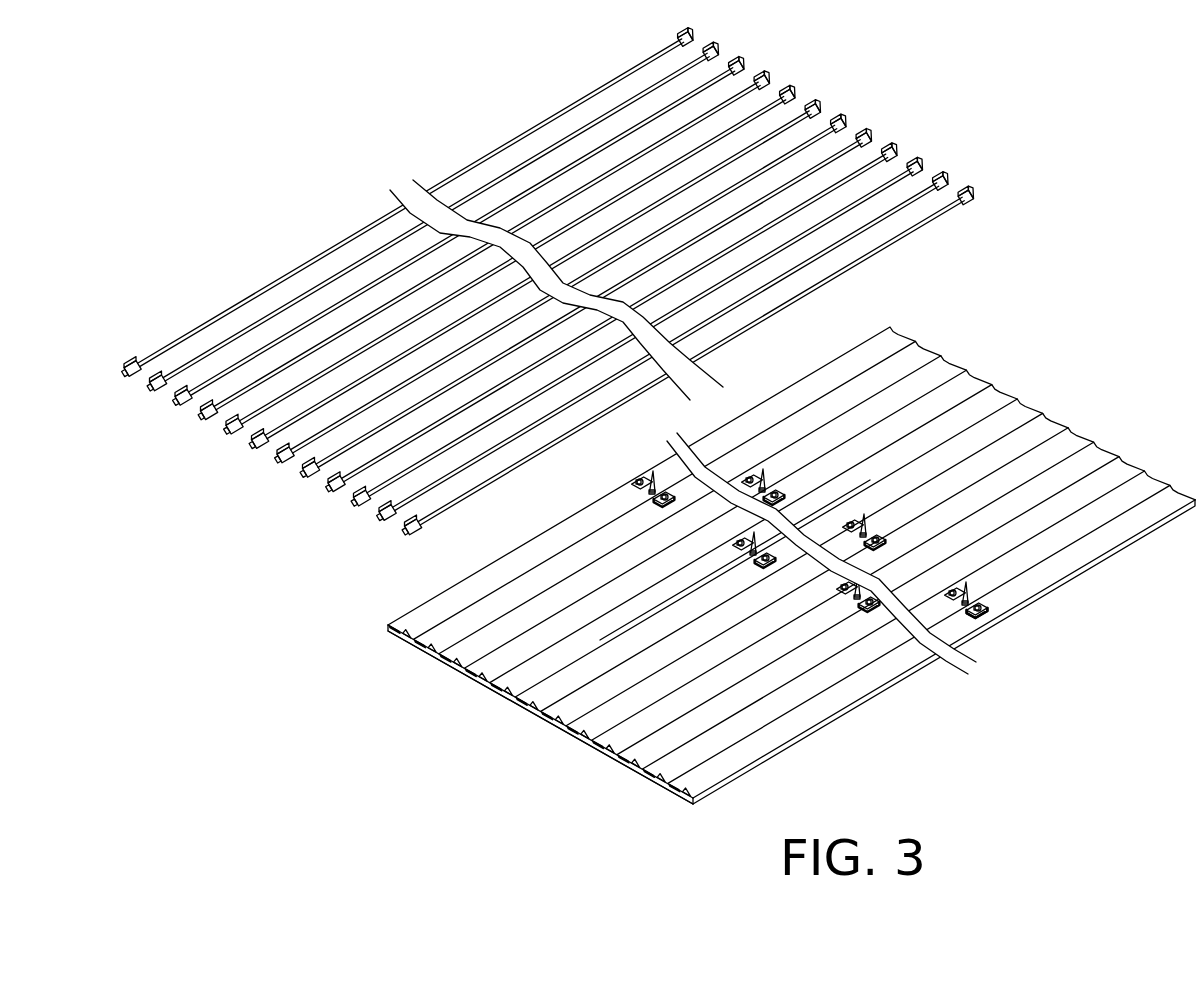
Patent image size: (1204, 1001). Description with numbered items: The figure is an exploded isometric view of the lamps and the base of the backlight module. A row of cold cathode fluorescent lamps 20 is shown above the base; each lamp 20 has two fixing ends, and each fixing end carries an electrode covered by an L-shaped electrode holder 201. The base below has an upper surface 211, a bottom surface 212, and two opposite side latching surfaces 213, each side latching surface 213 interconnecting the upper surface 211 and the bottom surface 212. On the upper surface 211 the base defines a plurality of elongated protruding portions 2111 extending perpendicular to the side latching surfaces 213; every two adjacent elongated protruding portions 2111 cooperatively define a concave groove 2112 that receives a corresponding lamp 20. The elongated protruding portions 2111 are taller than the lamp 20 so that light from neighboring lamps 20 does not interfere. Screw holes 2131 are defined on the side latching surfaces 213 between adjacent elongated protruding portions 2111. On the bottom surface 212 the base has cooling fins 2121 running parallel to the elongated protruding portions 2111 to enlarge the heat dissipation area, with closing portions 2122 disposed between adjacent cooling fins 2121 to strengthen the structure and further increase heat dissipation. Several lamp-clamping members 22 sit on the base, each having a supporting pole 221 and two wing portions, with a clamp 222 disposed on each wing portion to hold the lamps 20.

The lamp 20 is at (933, 222).
The electrode holder 201 is at (972, 190).
The upper surface 211 is at (998, 700).
The elongated protruding portion 2111 is at (808, 702).
The concave groove 2112 is at (895, 670).
The bottom surface 212 is at (777, 757).
The side latching surface 213 is at (657, 790).
The cooling fin 2121 is at (398, 637).
The screw hole 2131 is at (412, 645).
The closing portion 2122 is at (393, 648).
The lamp-clamping member 22 is at (1132, 625).
The supporting pole 221 is at (968, 586).
The clamp 222 is at (979, 611).